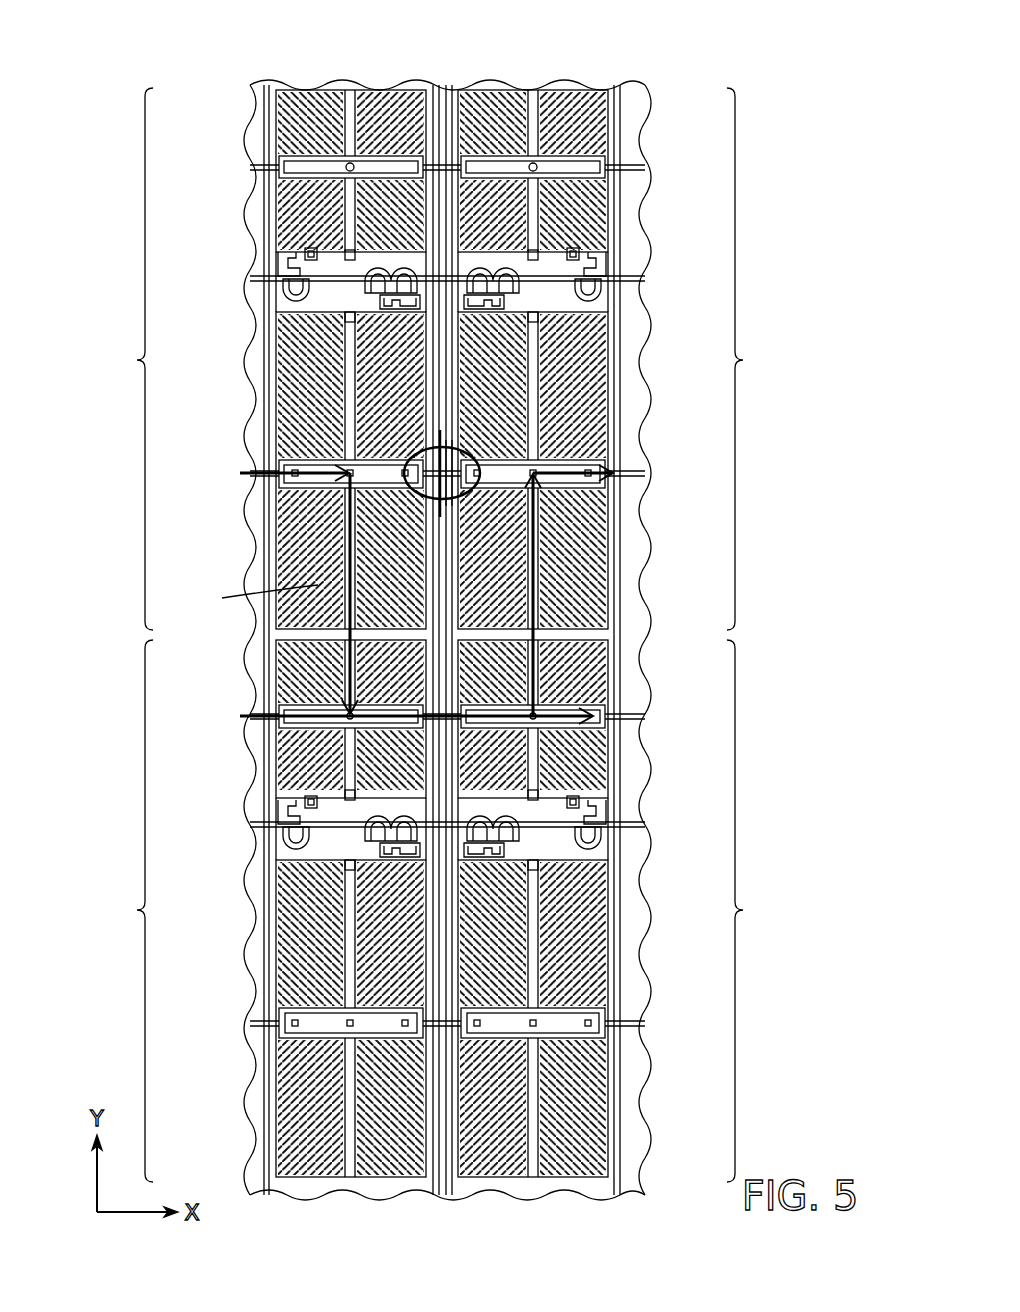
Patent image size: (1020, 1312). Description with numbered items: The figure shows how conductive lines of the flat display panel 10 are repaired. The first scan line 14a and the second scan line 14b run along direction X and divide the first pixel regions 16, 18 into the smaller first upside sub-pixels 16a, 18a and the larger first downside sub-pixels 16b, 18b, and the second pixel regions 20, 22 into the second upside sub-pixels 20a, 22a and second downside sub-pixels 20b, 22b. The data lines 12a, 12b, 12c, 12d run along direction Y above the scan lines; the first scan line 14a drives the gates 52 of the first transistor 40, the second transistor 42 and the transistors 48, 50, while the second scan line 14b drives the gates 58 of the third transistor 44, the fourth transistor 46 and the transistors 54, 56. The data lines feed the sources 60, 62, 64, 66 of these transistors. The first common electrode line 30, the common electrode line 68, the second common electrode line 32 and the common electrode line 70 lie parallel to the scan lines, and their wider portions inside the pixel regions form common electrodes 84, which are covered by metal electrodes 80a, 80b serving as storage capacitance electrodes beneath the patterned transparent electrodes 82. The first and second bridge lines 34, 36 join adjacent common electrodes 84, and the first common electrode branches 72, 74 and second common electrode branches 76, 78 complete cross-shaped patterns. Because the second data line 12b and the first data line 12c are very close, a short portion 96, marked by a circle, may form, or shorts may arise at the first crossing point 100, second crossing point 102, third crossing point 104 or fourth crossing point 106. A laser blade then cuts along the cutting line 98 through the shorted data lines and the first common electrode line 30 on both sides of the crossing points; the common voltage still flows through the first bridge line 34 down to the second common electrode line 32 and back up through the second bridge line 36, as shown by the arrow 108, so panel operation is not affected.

The flat display panel 10 is at (700, 72).
The first data line 12a is at (266, 86).
The second data line 12b is at (436, 88).
The first data line 12c is at (449, 88).
The second data line 12d is at (617, 88).
The first scan line 14a is at (640, 278).
The second scan line 14b is at (264, 832).
The first pixel region 16 is at (122, 359).
The first upside sub-pixel 16a is at (295, 147).
The first downside sub-pixel 16b is at (295, 470).
The first pixel region 18 is at (755, 359).
The first upside sub-pixel 18a is at (584, 147).
The first downside sub-pixel 18b is at (584, 470).
The second pixel region 20 is at (122, 911).
The second upside sub-pixel 20a is at (297, 716).
The second downside sub-pixel 20b is at (297, 1018).
The second pixel region 22 is at (755, 911).
The second upside sub-pixel 22a is at (587, 716).
The second downside sub-pixel 22b is at (616, 1146).
The first common electrode line 30 is at (622, 473).
The second common electrode line 32 is at (622, 716).
The first bridge line 34 is at (350, 540).
The second bridge line 36 is at (540, 560).
The first transistor 40 is at (387, 236).
The second transistor 42 is at (505, 236).
The third transistor 44 is at (268, 830).
The fourth transistor 46 is at (616, 838).
The transistor 48 is at (296, 238).
The transistor 50 is at (588, 238).
The gate 52 is at (365, 287).
The transistor 54 is at (292, 808).
The transistor 56 is at (580, 806).
The gate 58 is at (504, 856).
The source 60 is at (292, 849).
The source 62 is at (378, 856).
The source 64 is at (601, 270).
The source 66 is at (504, 305).
The common electrode line 68 is at (640, 167).
The common electrode line 70 is at (640, 1026).
The first common electrode branch 72 is at (350, 402).
The first common electrode branch 74 is at (538, 386).
The second common electrode branch 76 is at (355, 800).
The second common electrode branch 78 is at (534, 760).
The metal electrode 80a is at (300, 489).
The metal electrode 80b is at (300, 716).
The transparent electrode 82 is at (300, 1098).
The common electrode 84 is at (240, 473).
The short portion 96 is at (249, 598).
The cutting line 98 is at (318, 585).
The first crossing point 100 is at (399, 452).
The second crossing point 102 is at (407, 692).
The third crossing point 104 is at (476, 452).
The fourth crossing point 106 is at (478, 692).
The arrow 108 is at (540, 612).